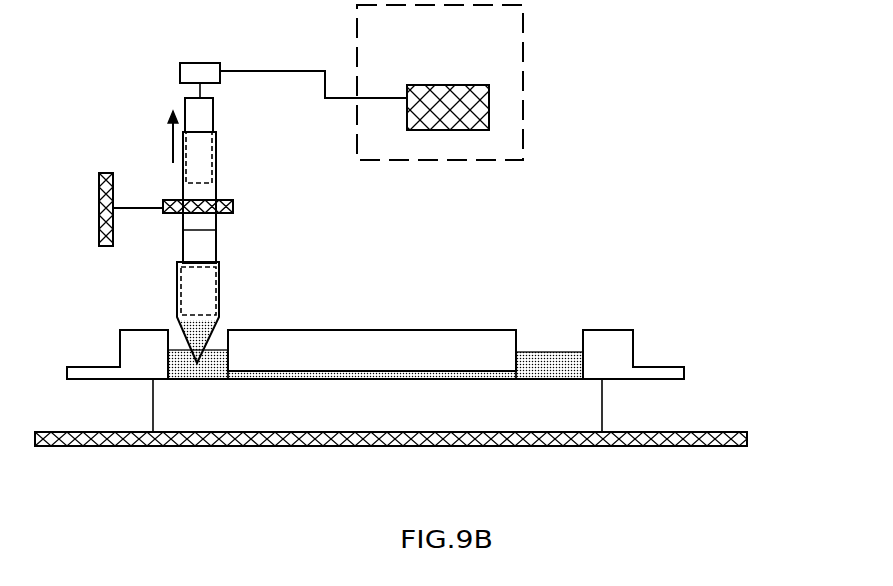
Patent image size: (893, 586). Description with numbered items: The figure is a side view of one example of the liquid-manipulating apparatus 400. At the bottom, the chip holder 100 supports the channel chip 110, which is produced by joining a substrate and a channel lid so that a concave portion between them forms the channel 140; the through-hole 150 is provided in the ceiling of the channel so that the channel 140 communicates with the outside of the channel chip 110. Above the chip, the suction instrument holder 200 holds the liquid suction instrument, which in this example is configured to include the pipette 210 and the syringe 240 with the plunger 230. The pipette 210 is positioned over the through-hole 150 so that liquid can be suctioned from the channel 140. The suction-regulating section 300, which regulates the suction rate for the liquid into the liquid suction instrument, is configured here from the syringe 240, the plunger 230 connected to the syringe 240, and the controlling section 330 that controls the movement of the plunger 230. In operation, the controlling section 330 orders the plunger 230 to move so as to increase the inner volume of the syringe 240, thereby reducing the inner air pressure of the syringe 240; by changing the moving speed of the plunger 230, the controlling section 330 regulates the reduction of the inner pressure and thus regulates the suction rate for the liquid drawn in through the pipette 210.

The chip holder 100 is at (562, 448).
The channel chip 110 is at (674, 315).
The channel 140 is at (392, 370).
The through-hole 150 is at (217, 335).
The suction instrument holder 200 is at (105, 172).
The pipette 210 is at (220, 270).
The plunger 230 is at (200, 120).
The syringe 240 is at (207, 223).
The suction-regulating section 300 is at (523, 113).
The controlling section 330 is at (445, 100).
The liquid-manipulating apparatus 400 is at (789, 63).